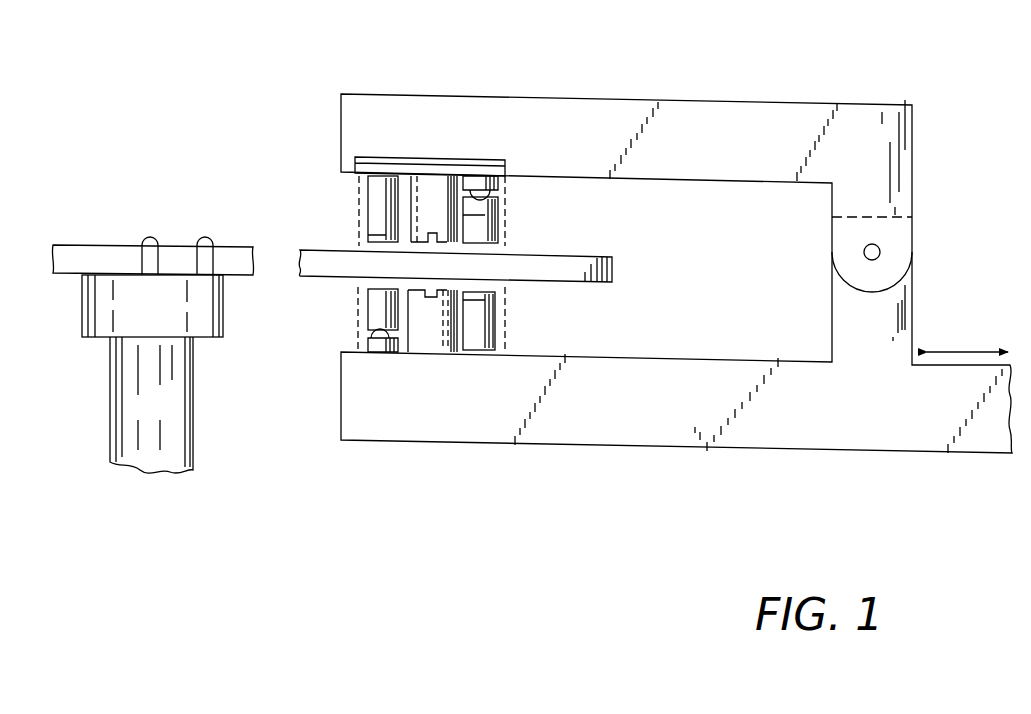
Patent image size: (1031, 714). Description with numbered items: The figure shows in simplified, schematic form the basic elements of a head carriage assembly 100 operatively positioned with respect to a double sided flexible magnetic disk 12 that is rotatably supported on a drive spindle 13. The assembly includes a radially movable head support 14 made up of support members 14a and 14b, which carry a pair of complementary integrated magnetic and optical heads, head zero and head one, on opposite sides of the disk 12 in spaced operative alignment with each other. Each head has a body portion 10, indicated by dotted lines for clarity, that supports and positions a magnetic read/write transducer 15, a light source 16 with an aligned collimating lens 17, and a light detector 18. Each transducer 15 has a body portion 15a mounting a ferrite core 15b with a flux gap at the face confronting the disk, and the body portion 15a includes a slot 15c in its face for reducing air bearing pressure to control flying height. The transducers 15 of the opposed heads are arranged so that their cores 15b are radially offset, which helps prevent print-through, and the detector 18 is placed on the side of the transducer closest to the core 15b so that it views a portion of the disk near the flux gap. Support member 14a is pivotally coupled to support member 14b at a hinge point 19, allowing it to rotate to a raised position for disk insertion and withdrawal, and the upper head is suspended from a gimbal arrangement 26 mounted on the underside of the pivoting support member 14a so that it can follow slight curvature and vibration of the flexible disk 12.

The head carriage assembly 100 is at (268, 113).
The body portion 10 is at (452, 245).
The double sided magnetic disk 12 is at (607, 249).
The drive spindle 13 is at (207, 433).
The head support 14 is at (685, 273).
The support member 14a is at (887, 142).
The support member 14b is at (880, 333).
The magnetic read/write transducer 15 is at (386, 245).
The body portion 15a is at (446, 199).
The ferrite core 15b is at (408, 172).
The slot 15c is at (437, 236).
The light source 16 is at (500, 182).
The collimating lens 17 is at (490, 203).
The light detector 18 is at (380, 237).
The hinge point 19 is at (880, 251).
The gimbal arrangement 26 is at (387, 170).